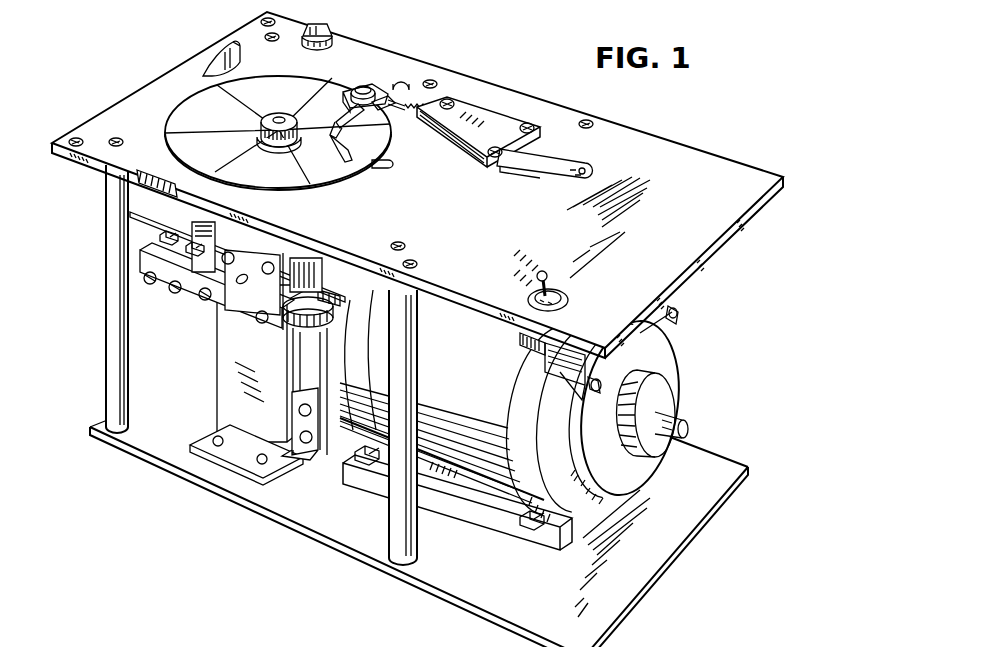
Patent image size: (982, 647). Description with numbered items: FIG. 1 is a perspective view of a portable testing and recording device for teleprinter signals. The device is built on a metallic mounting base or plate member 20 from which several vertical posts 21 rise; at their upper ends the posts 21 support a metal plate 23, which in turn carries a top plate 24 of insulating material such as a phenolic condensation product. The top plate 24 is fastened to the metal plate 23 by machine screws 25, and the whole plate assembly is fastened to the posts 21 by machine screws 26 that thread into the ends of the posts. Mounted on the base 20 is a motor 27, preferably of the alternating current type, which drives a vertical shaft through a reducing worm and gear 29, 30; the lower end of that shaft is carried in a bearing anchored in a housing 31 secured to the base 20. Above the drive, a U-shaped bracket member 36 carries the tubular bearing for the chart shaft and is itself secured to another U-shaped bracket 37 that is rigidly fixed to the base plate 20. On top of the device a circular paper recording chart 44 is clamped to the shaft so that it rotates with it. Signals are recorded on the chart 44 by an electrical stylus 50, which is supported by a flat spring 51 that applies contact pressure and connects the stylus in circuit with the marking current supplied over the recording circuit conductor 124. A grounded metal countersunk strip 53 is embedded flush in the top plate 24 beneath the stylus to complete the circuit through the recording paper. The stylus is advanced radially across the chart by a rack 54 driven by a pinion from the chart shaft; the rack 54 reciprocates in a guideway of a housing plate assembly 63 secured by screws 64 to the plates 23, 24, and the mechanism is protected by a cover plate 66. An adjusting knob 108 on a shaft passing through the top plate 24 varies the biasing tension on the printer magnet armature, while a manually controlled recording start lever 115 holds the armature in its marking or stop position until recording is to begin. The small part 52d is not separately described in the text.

The mounting base or plate member 20 is at (300, 508).
The vertical posts 21 is at (108, 333).
The metal plate 23 is at (98, 170).
The top plate 24 is at (150, 100).
The machine screws 25 is at (74, 138).
The machine screws 26 is at (122, 143).
The motor 27 is at (516, 420).
The reducing worm 29 is at (322, 262).
The reducing gear 30 is at (295, 325).
The housing 31 is at (320, 395).
The U-shaped bracket member 36 is at (242, 245).
The U-shaped bracket 37 is at (232, 333).
The recording chart 44 is at (186, 122).
The electrical stylus 50 is at (356, 158).
The flat spring 51 is at (362, 86).
The lever arm 52d is at (394, 82).
The grounded metal countersunk strip 53 is at (392, 166).
The rack 54 is at (410, 107).
The housing plate assembly 63 is at (497, 170).
The screws 64 is at (531, 125).
The cover plate 66 is at (472, 120).
The adjusting knob 108 is at (283, 112).
The recording start lever 115 is at (210, 62).
The recording circuit conductor 124 is at (406, 76).